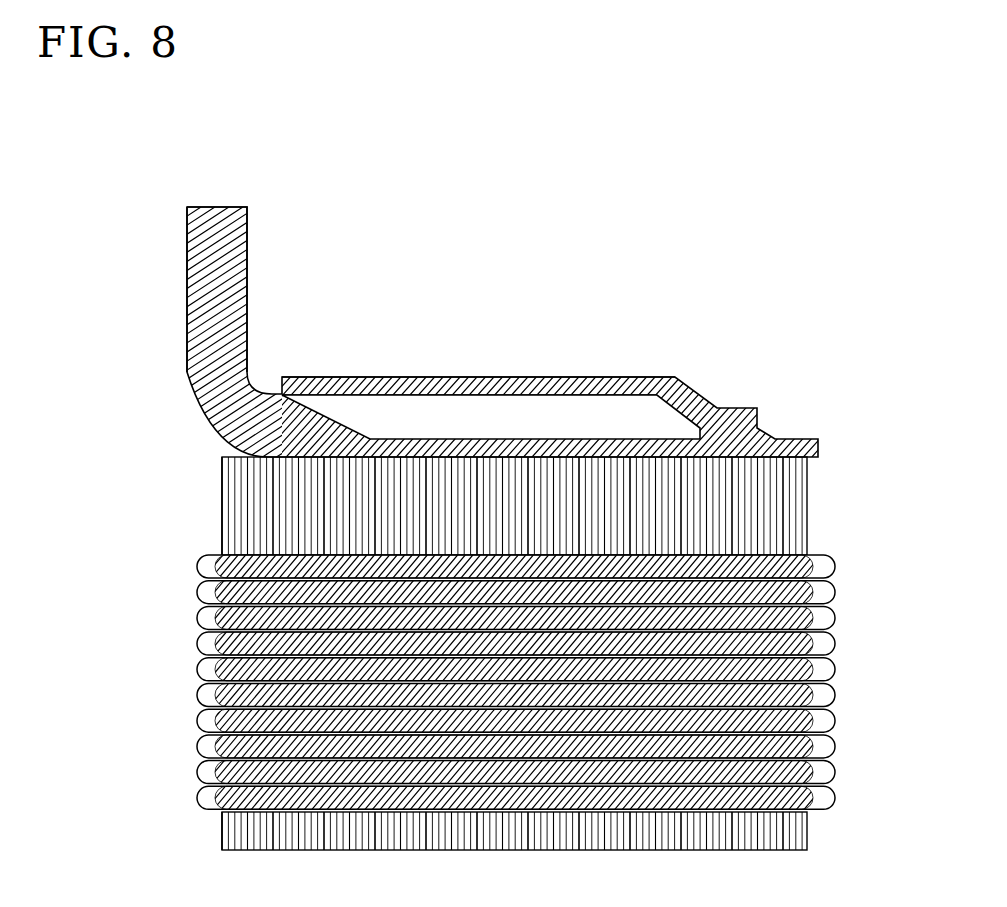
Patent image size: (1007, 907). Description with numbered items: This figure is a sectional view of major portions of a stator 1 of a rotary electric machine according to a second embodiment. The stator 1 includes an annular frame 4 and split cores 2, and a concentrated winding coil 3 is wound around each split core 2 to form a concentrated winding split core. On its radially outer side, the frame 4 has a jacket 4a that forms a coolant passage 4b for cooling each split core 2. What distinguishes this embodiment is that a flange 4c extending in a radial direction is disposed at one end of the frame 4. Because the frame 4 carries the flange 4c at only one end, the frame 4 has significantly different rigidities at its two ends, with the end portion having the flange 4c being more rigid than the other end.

The stator 1 is at (502, 360).
The split core 2 is at (237, 500).
The concentrated winding coil 3 is at (787, 643).
The frame 4 is at (447, 332).
The jacket 4a is at (555, 377).
The coolant passage 4b is at (620, 412).
The flange 4c is at (187, 337).